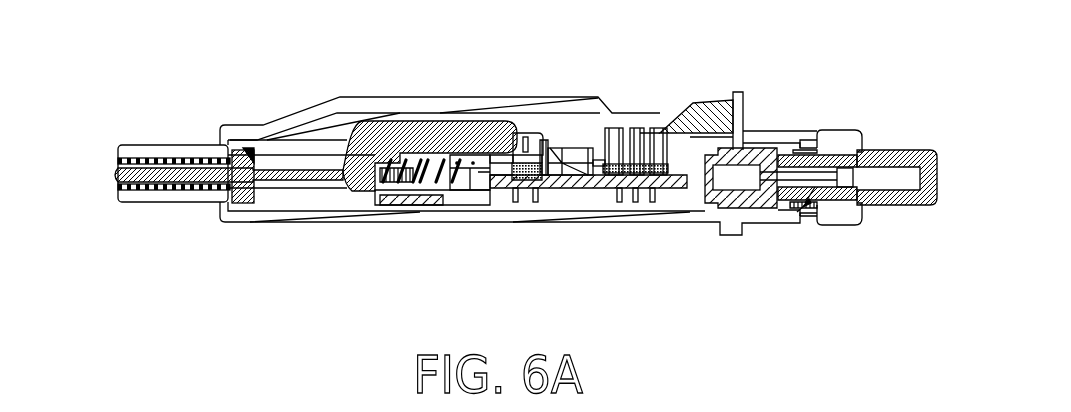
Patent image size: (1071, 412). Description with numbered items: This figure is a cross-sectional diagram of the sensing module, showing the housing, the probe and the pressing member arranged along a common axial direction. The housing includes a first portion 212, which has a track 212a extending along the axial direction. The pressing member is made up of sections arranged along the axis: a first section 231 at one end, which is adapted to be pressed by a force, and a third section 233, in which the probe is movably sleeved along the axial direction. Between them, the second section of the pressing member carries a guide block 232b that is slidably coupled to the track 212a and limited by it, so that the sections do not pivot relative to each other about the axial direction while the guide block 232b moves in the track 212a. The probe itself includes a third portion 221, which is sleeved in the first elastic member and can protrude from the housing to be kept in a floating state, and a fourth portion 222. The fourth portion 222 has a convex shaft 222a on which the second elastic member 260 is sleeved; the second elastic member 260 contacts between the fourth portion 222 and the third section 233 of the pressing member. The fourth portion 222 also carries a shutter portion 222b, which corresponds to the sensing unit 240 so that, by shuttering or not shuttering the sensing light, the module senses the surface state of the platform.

The third portion 221 is at (118, 176).
The fourth portion 222 is at (293, 168).
The convex shaft 222a is at (386, 190).
The shutter portion 222b is at (432, 127).
The sensing unit 240 is at (537, 140).
The second elastic member 260 is at (450, 190).
The third section 233 is at (767, 118).
The first portion 212 is at (843, 130).
The track 212a is at (795, 206).
The first section 231 is at (900, 150).
The guide block 232b is at (847, 205).